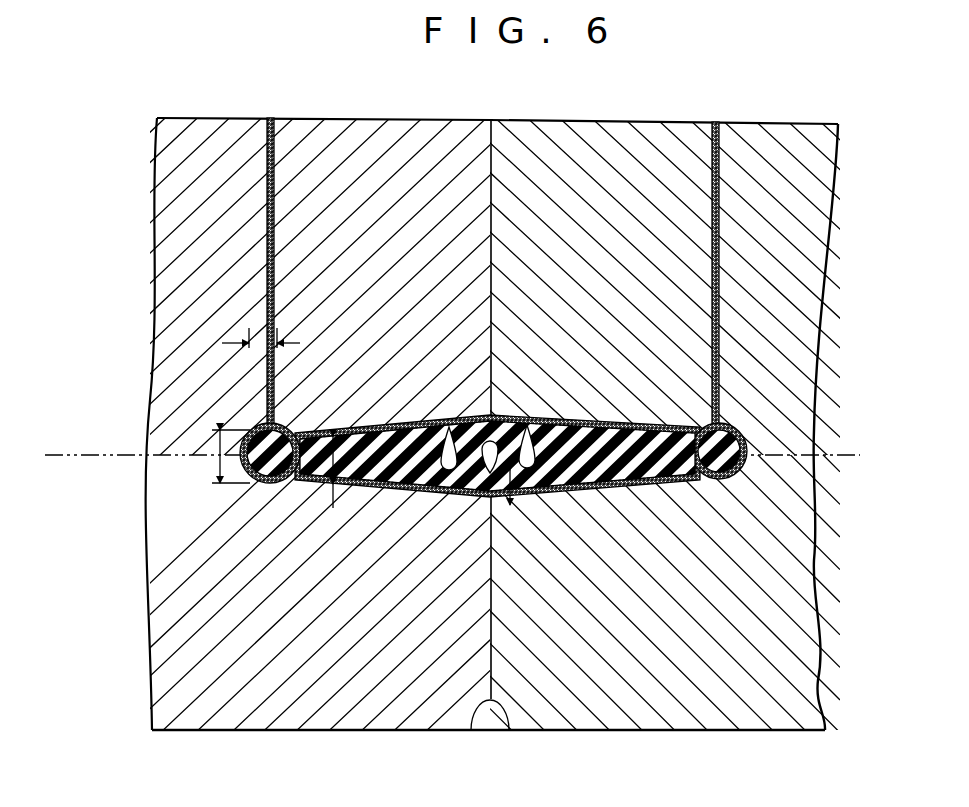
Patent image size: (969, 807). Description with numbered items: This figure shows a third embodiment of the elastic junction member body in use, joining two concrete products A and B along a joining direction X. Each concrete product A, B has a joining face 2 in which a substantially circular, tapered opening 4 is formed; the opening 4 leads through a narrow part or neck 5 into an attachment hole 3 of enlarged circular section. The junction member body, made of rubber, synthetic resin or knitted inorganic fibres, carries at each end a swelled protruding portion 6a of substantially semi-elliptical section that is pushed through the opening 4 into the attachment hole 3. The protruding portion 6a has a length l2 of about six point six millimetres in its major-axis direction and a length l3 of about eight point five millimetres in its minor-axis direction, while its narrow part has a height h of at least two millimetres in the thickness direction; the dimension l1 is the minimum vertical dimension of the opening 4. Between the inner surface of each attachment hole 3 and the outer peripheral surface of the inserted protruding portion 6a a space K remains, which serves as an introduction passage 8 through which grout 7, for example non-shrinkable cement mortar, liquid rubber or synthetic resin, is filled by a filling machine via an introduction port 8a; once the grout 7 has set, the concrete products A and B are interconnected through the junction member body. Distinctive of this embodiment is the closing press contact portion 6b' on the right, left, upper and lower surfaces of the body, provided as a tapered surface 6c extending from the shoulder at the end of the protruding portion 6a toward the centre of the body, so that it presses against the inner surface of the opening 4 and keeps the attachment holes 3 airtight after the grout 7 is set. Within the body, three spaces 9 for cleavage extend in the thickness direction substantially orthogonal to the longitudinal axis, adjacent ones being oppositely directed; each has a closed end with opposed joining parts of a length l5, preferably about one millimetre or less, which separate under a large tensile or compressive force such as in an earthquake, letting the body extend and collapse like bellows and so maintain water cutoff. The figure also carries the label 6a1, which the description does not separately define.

The joining face 2 is at (465, 730).
The attachment hole 3 is at (272, 513).
The opening 4 is at (491, 410).
The narrow part or neck 5 is at (255, 425).
The protruding portion 6a is at (245, 465).
The lower end portion of seal 6a1 is at (520, 580).
The closing press contact portion 6b' is at (497, 279).
The tapered surface 6c is at (683, 490).
The grout 7 is at (730, 500).
The introduction passage 8 is at (265, 497).
The introduction port 8a is at (270, 128).
The space for cleavage 9 is at (432, 410).
The concrete product A is at (320, 730).
The concrete product B is at (698, 730).
The space K is at (247, 493).
The joining direction X is at (110, 452).
The minimum vertical dimension of the opening l1 is at (318, 484).
The length in major axis direction l2 is at (272, 333).
The length in minor axis direction l3 is at (212, 432).
The length of joining parts l5 is at (512, 505).
The height of narrow part h is at (346, 484).